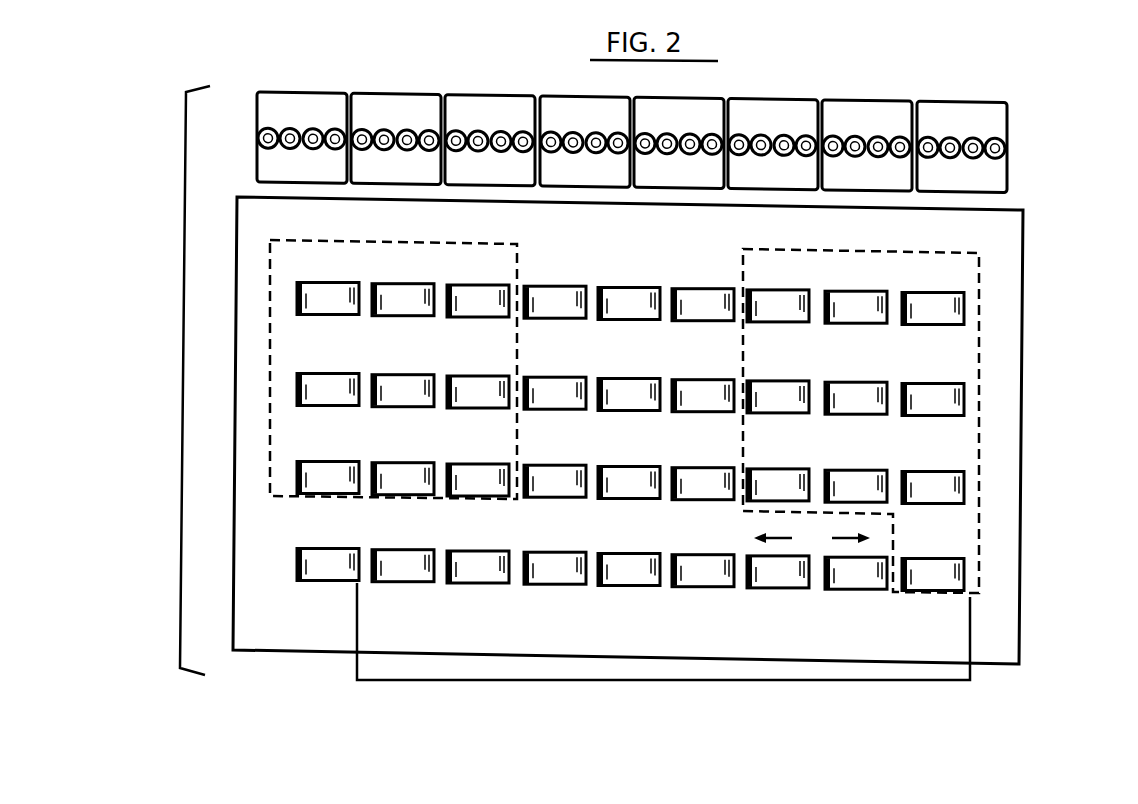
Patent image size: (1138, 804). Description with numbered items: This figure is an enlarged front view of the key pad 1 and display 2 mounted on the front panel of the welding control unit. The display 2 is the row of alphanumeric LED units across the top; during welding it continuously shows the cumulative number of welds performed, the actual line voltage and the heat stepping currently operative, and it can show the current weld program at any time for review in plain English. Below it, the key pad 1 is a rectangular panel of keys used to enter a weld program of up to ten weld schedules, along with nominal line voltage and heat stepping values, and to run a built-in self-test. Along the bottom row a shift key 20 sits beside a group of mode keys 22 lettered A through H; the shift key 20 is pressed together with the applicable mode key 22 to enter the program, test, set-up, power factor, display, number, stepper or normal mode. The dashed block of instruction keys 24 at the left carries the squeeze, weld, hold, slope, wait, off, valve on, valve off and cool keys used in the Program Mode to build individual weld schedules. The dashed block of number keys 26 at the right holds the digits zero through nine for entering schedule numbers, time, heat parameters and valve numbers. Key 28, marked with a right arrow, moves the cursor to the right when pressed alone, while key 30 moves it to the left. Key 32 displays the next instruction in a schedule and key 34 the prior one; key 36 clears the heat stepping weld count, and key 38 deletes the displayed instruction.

The key pad 1 is at (992, 466).
The display 2 is at (1000, 120).
The shift key 20 is at (300, 557).
The mode keys 22 is at (578, 684).
The instruction keys 24 is at (268, 452).
The number keys 26 is at (981, 360).
The G key 28 is at (832, 576).
The F key 30 is at (760, 572).
The next key 32 is at (693, 478).
The last key 34 is at (693, 566).
The reset stepper key 36 is at (366, 570).
The delete key 38 is at (466, 571).